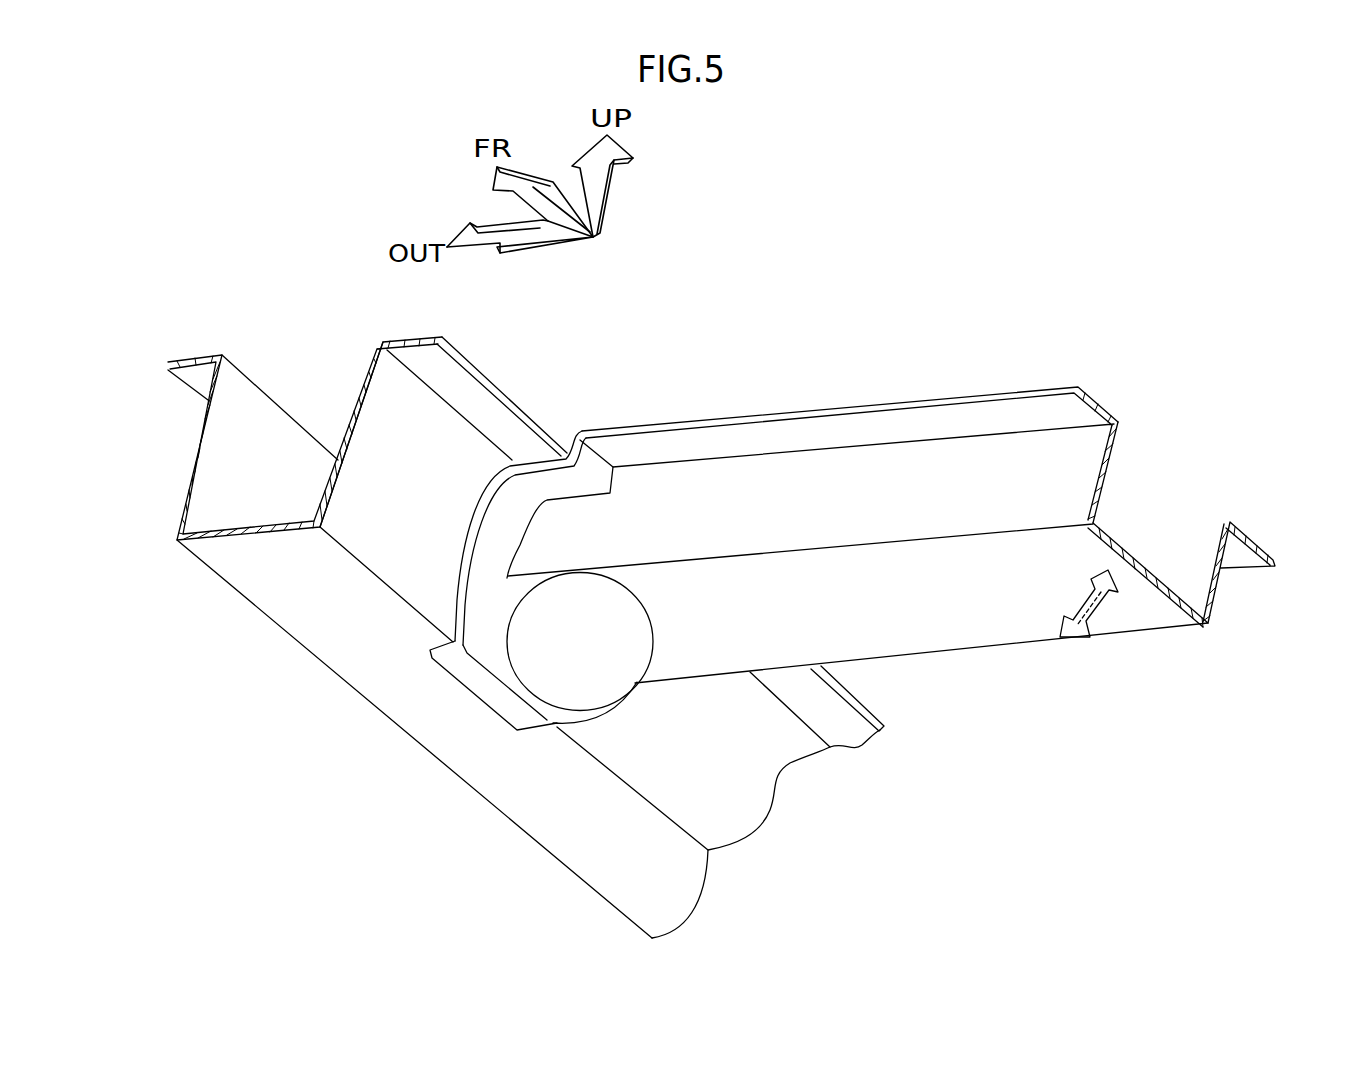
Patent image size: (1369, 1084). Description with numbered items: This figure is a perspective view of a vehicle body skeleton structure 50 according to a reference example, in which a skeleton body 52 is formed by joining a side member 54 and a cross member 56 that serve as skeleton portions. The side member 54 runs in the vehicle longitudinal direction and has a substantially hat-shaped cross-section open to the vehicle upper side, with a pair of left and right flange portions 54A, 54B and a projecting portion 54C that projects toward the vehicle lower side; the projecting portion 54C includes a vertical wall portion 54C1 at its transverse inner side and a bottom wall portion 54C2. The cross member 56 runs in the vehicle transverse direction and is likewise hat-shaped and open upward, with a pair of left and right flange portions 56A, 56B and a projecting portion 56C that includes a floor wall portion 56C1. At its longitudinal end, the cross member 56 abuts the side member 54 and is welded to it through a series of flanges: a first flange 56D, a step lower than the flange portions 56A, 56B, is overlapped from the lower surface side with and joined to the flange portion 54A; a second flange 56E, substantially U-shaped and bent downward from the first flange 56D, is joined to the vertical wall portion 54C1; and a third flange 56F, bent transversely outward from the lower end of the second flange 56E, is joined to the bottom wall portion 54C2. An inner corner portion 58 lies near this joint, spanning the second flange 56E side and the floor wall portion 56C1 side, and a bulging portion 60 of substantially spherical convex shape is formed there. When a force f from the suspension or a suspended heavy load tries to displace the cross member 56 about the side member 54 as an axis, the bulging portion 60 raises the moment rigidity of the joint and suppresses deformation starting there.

The vehicle body skeleton structure 50 is at (855, 270).
The skeleton body 52 is at (765, 370).
The side member 54 is at (255, 590).
The flange portion 54A is at (443, 367).
The flange portion 54B is at (192, 377).
The projecting portion 54C is at (162, 508).
The vertical wall portion 54C1 is at (383, 427).
The bottom wall portion 54C2 is at (372, 680).
The cross member 56 is at (1193, 437).
The flange portion 56A is at (1098, 402).
The flange portion 56B is at (1248, 537).
The projecting portion 56C is at (1100, 652).
The floor wall portion 56C1 is at (790, 577).
The first flange 56D is at (550, 482).
The second flange 56E is at (485, 608).
The third flange 56F is at (472, 682).
The inner corner portion 58 is at (668, 658).
The bulging portion 60 is at (590, 687).
The force f is at (1100, 592).